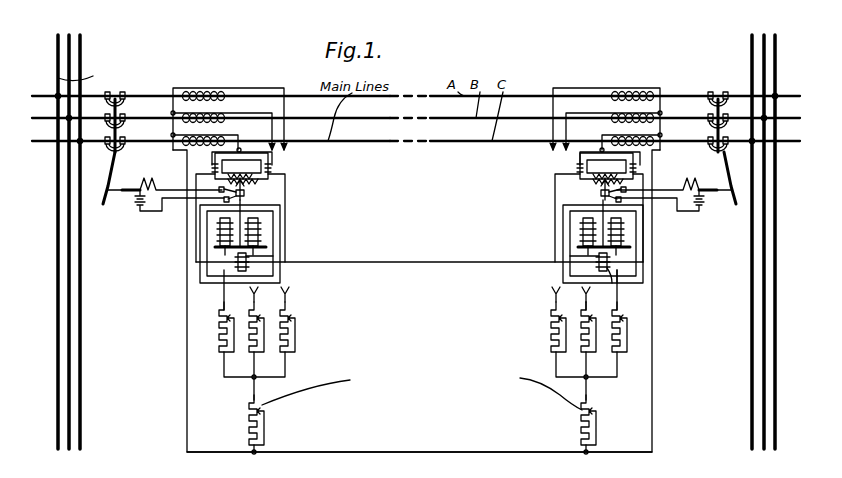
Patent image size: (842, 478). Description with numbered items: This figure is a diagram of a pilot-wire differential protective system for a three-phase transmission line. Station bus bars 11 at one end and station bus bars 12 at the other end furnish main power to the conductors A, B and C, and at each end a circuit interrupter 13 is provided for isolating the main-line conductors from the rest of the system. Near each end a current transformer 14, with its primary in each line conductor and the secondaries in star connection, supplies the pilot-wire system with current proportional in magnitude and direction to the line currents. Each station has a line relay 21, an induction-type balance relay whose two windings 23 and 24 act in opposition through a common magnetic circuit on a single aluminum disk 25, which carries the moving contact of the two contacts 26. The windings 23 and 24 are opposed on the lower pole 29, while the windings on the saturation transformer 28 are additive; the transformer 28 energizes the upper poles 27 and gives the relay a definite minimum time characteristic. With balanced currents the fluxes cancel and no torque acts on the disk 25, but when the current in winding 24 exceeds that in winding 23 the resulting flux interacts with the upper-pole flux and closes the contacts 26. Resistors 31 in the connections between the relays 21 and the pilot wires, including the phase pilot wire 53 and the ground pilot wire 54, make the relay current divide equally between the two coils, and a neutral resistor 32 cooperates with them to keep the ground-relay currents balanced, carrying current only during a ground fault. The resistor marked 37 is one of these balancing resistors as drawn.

The station bus bars 11 is at (86, 27).
The station bus bars 12 is at (767, 27).
The circuit interrupter 13 is at (114, 93).
The current transformer 14 is at (206, 93).
The line relay 21 is at (306, 185).
The winding 23 is at (420, 260).
The winding 24 is at (246, 268).
The disk 25 is at (268, 247).
The contacts 26 is at (212, 197).
The upper poles 27 is at (262, 233).
The saturation transformer 28 is at (268, 158).
The lower pole 29 is at (617, 283).
The resistors 31 is at (429, 343).
The resistor 32 is at (258, 406).
The resistor 37 is at (597, 308).
The pilot wire 53 is at (462, 262).
The pilot wire 54 is at (503, 452).